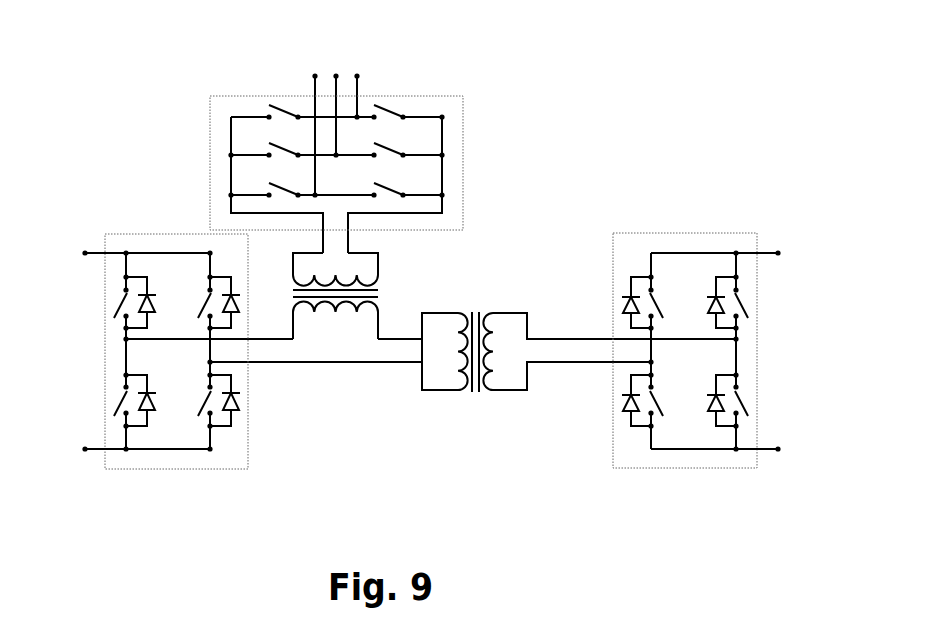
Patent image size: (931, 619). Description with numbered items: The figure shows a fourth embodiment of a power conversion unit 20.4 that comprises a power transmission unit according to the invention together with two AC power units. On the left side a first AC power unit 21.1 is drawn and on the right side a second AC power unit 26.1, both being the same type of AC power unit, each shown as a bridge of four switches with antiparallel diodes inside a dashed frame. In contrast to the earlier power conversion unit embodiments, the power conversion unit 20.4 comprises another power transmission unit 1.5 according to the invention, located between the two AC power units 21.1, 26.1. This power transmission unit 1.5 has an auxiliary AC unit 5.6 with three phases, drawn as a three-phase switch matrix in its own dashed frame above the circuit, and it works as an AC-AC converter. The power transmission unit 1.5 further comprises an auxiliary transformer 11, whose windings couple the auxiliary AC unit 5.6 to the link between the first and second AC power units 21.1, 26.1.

The power transmission unit 1.5 is at (560, 88).
The auxiliary AC unit 5.6 is at (463, 162).
The auxiliary transformer 11 is at (378, 288).
The power conversion unit 20.4 is at (627, 114).
The first AC power unit 21.1 is at (143, 237).
The second AC power unit 26.1 is at (682, 238).